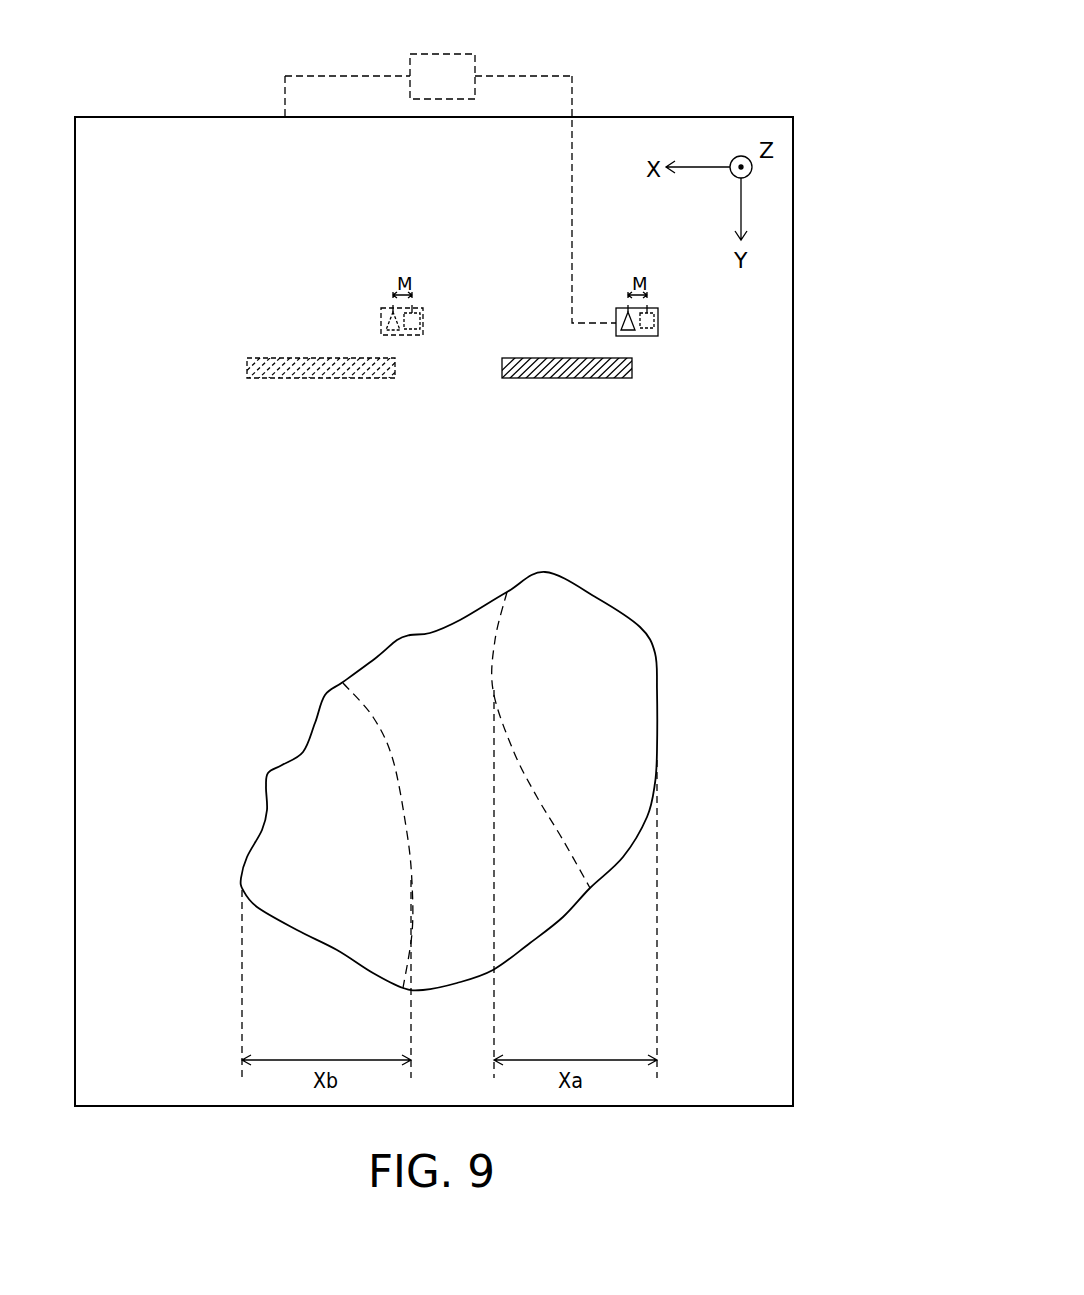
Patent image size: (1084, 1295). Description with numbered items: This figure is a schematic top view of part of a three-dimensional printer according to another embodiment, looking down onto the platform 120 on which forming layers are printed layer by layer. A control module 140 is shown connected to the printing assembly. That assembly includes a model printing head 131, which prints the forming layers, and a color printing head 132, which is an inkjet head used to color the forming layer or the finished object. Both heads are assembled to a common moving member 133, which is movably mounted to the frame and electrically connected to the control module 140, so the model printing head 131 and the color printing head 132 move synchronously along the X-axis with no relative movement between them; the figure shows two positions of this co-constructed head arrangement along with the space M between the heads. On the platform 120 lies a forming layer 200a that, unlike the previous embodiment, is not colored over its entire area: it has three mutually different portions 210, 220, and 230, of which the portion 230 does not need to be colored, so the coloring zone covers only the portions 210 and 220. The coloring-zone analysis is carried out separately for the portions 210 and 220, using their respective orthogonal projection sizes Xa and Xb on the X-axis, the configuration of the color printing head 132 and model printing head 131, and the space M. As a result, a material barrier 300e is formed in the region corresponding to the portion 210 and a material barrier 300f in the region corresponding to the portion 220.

The platform 120 is at (196, 116).
The control module 140 is at (459, 90).
The forming layer 200a is at (745, 2).
The portion 210 is at (538, 594).
The portion 220 is at (310, 785).
The portion 230 is at (388, 678).
The model printing head 131 is at (383, 322).
The color printing head 132 is at (425, 325).
The moving member 133 is at (418, 310).
The material barrier 300f is at (317, 405).
The material barrier 300e is at (573, 405).